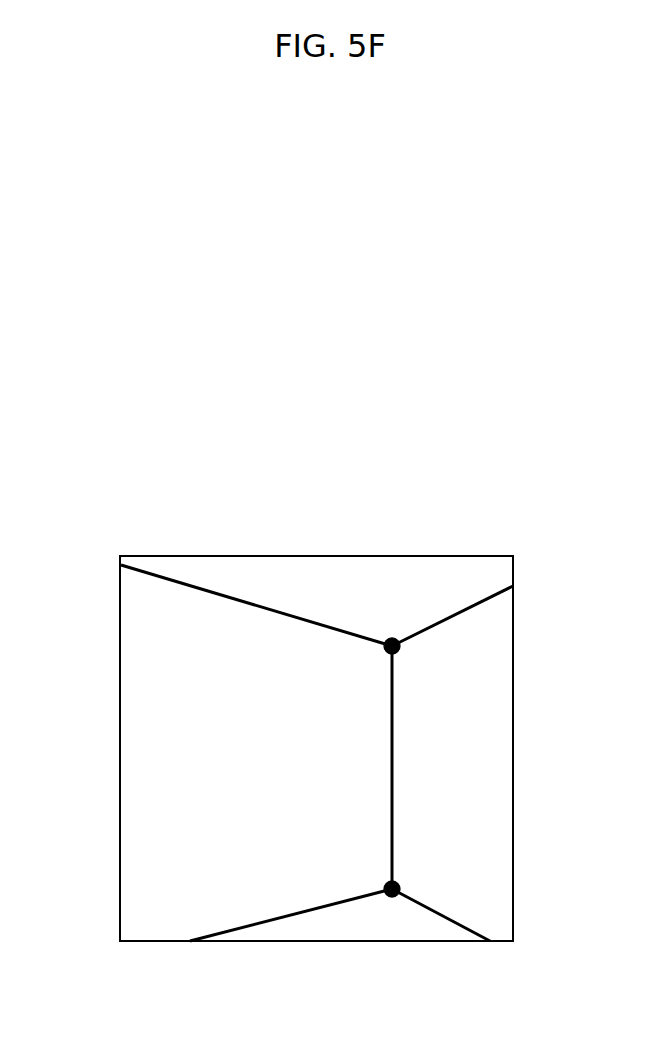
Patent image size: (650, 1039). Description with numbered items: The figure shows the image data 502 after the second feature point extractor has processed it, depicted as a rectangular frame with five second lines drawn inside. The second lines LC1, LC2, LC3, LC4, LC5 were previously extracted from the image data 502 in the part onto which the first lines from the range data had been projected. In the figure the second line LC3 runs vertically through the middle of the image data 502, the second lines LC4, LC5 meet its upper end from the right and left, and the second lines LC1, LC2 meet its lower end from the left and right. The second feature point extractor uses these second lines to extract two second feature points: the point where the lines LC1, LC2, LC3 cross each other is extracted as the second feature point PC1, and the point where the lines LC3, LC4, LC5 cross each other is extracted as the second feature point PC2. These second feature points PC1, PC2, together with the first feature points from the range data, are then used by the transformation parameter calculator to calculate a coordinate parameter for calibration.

The image data 502 is at (120, 747).
The second line LC1 is at (252, 926).
The second line LC2 is at (456, 925).
The second line LC3 is at (392, 749).
The second line LC4 is at (467, 608).
The second line LC5 is at (272, 609).
The second feature point PC1 is at (400, 887).
The second feature point PC2 is at (400, 648).